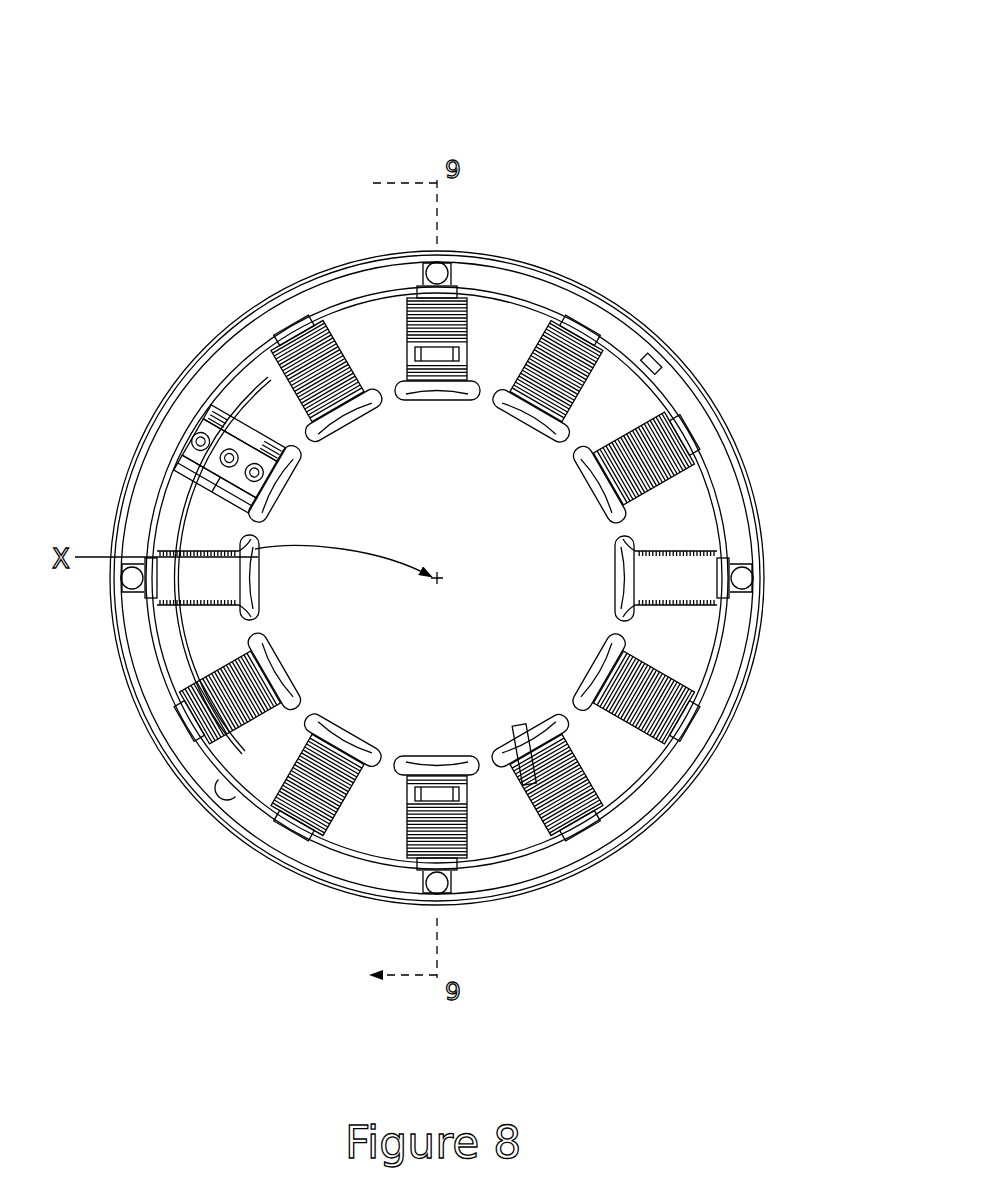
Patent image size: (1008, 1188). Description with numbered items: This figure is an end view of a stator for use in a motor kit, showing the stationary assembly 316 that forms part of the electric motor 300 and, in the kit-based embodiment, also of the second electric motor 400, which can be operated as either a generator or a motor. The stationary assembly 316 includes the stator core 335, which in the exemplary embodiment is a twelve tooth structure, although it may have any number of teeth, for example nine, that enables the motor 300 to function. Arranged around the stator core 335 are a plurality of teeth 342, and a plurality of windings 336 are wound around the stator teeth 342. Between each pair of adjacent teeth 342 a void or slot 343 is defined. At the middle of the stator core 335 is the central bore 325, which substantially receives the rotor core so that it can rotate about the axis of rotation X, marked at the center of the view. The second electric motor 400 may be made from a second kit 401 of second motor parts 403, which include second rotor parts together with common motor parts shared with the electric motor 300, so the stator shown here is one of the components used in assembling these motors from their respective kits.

The second electric motor 400 is at (634, 89).
The electric motor 300 is at (214, 152).
The stationary assembly 316 is at (204, 297).
The second kit 401 is at (689, 284).
The second motor parts 403 is at (771, 417).
The teeth 342 is at (786, 569).
The slot 343 is at (530, 878).
The central bore 325 is at (494, 418).
The windings 336 is at (664, 664).
The stator core 335 is at (422, 717).